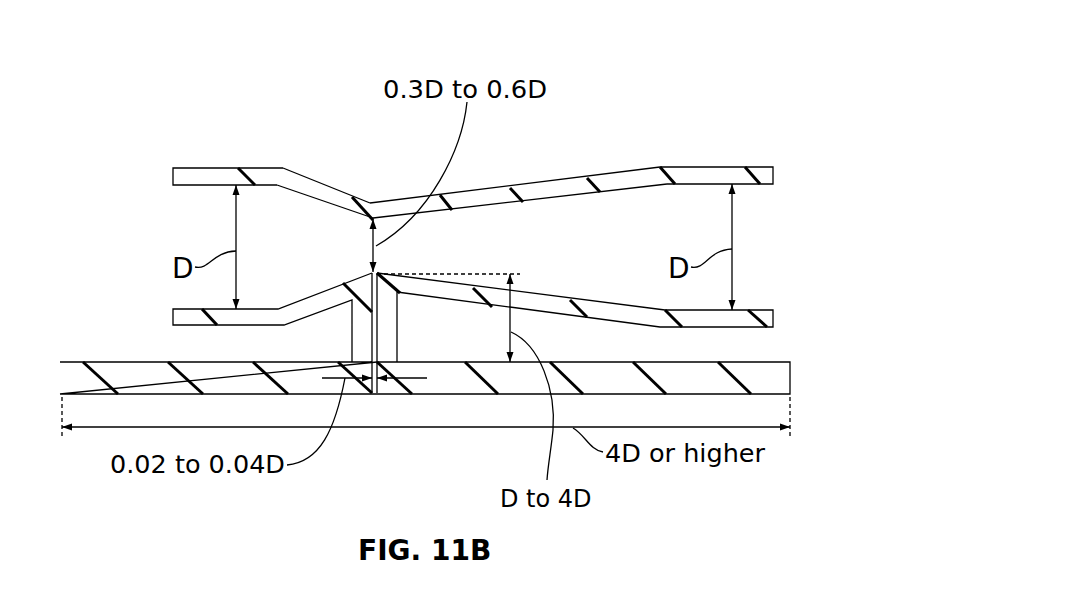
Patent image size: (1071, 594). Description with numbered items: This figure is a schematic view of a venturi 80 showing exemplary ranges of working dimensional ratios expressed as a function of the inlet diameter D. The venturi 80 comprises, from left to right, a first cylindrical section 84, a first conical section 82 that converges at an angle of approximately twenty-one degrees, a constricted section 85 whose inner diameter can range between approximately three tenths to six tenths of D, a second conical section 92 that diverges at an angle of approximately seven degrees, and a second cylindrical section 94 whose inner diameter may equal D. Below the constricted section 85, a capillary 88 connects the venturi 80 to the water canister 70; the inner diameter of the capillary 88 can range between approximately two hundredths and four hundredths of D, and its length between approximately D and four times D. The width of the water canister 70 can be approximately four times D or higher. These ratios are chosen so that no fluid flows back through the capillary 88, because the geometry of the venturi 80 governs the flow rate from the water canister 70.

The water canister 70 is at (770, 358).
The venturi 80 is at (726, 94).
The first conical section 82 is at (337, 190).
The first cylindrical section 84 is at (241, 168).
The constricted section 85 is at (372, 240).
The capillary 88 is at (397, 336).
The second conical section 92 is at (548, 181).
The second cylindrical section 94 is at (738, 167).